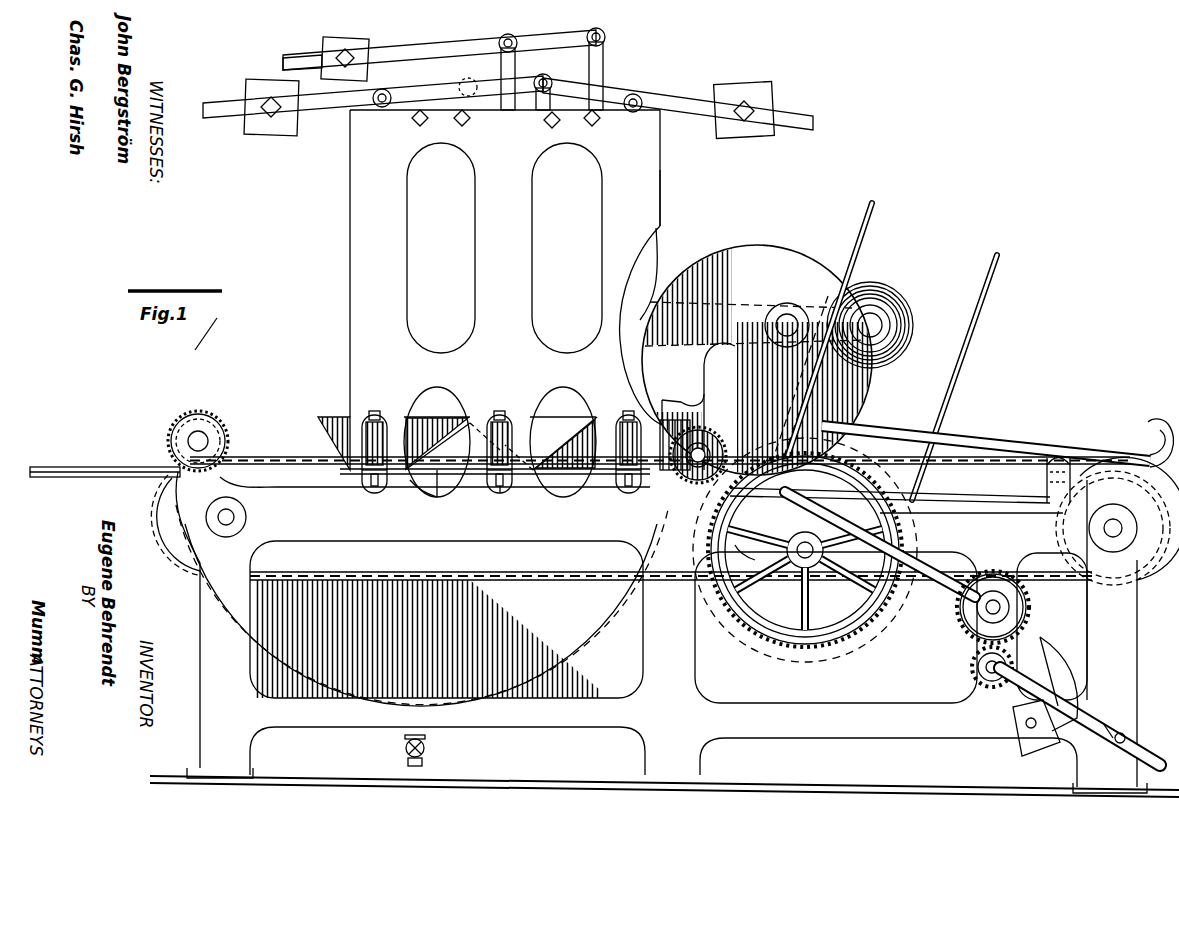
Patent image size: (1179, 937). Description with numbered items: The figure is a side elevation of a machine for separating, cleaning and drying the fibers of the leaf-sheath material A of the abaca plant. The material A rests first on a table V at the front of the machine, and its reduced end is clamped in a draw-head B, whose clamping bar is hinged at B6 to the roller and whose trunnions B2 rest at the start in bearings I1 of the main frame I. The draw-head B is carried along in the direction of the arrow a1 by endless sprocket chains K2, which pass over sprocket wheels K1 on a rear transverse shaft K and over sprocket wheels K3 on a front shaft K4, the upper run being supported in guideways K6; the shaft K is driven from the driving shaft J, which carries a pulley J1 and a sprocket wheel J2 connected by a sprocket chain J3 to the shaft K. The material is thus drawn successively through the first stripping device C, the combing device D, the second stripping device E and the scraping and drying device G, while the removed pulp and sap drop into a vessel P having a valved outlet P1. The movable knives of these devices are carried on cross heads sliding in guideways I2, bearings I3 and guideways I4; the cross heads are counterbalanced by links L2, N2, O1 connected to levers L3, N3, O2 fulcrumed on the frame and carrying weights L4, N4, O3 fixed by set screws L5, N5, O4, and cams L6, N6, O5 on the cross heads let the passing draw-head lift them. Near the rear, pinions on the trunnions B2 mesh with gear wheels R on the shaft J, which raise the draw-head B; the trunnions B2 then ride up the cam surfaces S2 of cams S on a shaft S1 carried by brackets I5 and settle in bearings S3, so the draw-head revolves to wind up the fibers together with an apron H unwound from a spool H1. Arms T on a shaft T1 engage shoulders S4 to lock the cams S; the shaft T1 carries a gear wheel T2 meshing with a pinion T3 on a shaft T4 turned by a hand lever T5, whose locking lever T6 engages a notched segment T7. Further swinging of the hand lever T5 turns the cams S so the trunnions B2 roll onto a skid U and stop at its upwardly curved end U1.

The leaf sheath material A is at (72, 467).
The table V is at (72, 478).
The arrow a1 is at (318, 400).
The draw-head B is at (198, 411).
The trunnions B2 is at (205, 447).
The hinge B6 is at (701, 484).
The first stripping device C is at (348, 487).
The combing device D is at (416, 489).
The second stripping device E is at (496, 494).
The scraping and drying device G is at (590, 486).
The apron H is at (884, 301).
The spool H1 is at (892, 328).
The main frame I is at (410, 541).
The bearings I1 is at (178, 447).
The guideways I2 is at (350, 265).
The bearings I3 is at (478, 263).
The guideways I4 is at (645, 203).
The brackets I5 is at (664, 262).
The driving shaft J is at (804, 549).
The pulley J1 is at (790, 628).
The sprocket wheel J2 is at (752, 552).
The sprocket chain J3 is at (850, 551).
The transverse shaft K is at (1104, 524).
The sprocket wheels K1 is at (1150, 586).
The sprocket chains K2 is at (296, 457).
The sprocket wheels K3 is at (184, 509).
The transverse shaft K4 is at (234, 517).
The guideways K6 is at (444, 472).
The link L2 is at (384, 108).
The lever L3 is at (329, 108).
The weight L4 is at (251, 86).
The set screw L5 is at (271, 115).
The cam L6 is at (340, 420).
The link N2 is at (507, 108).
The lever N3 is at (476, 50).
The weight N4 is at (368, 42).
The set screw N5 is at (345, 57).
The cam N6 is at (452, 422).
The link O1 is at (633, 113).
The lever O2 is at (682, 106).
The weight O3 is at (742, 93).
The set screw O4 is at (744, 118).
The cam O5 is at (668, 428).
The vessel P is at (563, 664).
The valved outlet P1 is at (425, 750).
The gear wheels R is at (840, 646).
The cams S is at (860, 386).
The shaft S1 is at (788, 320).
The cam surfaces S2 is at (730, 402).
The bearings S3 is at (712, 362).
The shoulders S4 is at (668, 380).
The arms T is at (927, 568).
The shaft T1 is at (984, 608).
The gear wheel T2 is at (976, 649).
The pinion T3 is at (1005, 663).
The shaft T4 is at (984, 673).
The hand lever T5 is at (1092, 742).
The locking lever T6 is at (1090, 713).
The notched segment T7 is at (1078, 674).
The skid U is at (1029, 437).
The upwardly curved end U1 is at (1150, 424).